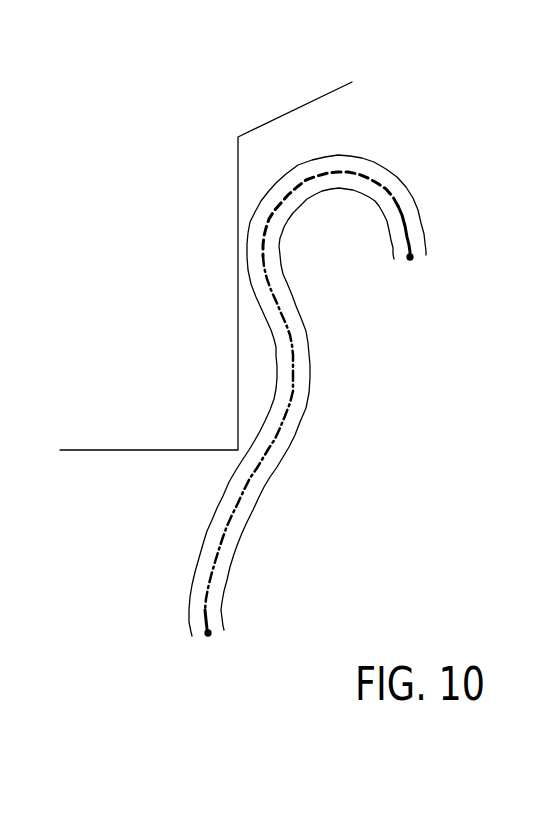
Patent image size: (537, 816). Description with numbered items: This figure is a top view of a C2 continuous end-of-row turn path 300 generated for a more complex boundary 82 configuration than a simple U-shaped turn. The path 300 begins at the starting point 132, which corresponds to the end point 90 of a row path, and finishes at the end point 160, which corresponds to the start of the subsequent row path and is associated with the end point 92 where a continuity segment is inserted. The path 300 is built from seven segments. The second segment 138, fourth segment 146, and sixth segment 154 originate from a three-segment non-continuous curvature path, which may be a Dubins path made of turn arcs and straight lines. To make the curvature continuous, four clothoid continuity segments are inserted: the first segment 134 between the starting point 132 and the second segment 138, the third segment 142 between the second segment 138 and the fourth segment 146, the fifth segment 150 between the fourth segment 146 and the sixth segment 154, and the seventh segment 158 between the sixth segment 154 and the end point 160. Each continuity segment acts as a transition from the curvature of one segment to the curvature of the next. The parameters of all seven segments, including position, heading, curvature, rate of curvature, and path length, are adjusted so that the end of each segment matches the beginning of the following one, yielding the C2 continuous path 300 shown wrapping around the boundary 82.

The boundary 82 is at (296, 108).
The end point of row path 90 is at (468, 272).
The end point 92 is at (187, 649).
The starting point 132 is at (410, 257).
The first segment 134 is at (407, 232).
The second segment 138 is at (338, 172).
The third segment 142 is at (278, 304).
The fourth segment 146 is at (257, 477).
The fifth segment 150 is at (204, 598).
The sixth segment 154 is at (203, 615).
The seventh segment 158 is at (187, 649).
The end point 160 is at (187, 649).
The C2 continuous end-of-row turn path 300 is at (311, 397).